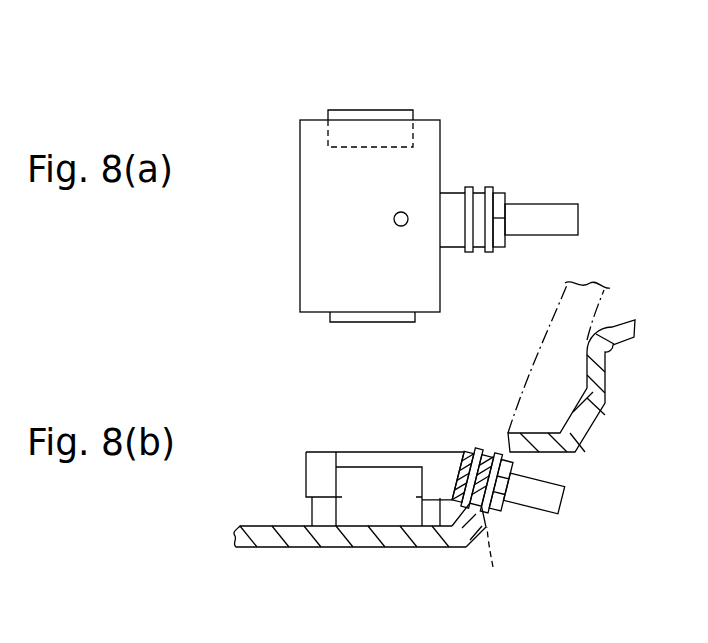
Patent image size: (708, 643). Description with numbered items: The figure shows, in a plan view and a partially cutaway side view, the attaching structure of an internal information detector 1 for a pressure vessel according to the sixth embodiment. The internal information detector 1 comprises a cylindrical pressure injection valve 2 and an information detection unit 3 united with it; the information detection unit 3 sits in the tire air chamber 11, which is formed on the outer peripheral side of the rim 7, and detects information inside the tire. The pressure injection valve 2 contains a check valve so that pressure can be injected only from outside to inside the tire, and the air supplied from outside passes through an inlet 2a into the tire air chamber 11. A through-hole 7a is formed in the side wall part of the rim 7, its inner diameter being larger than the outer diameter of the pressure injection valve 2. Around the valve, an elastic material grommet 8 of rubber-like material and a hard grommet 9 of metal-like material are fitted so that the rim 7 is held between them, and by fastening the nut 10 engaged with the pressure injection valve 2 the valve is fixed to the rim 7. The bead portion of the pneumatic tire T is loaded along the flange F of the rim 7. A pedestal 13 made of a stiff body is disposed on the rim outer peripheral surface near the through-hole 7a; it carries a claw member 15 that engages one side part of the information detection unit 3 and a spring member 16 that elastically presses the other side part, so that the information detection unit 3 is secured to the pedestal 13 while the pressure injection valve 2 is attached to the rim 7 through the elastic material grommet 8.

In FIG. 8A, the internal information detector 1 is at (313, 118).
In FIG. 8B, the internal information detector 1 is at (401, 450).
In FIG. 8A, the pressure injection valve 2 is at (548, 210).
In FIG. 8B, the pressure injection valve 2 is at (552, 500).
In FIG. 8A, the inlet 2a is at (406, 213).
In FIG. 8A, the information detection unit 3 is at (300, 212).
In FIG. 8B, the information detection unit 3 is at (320, 465).
In FIG. 8B, the rim 7 is at (277, 540).
In FIG. 8B, the through-hole 7a is at (483, 531).
In FIG. 8A, the elastic material grommet 8 is at (470, 187).
In FIG. 8B, the elastic material grommet 8 is at (473, 449).
In FIG. 8A, the hard grommet 9 is at (490, 187).
In FIG. 8B, the hard grommet 9 is at (499, 451).
In FIG. 8A, the nut 10 is at (505, 233).
In FIG. 8B, the nut 10 is at (512, 468).
In FIG. 8B, the tire air chamber 11 is at (260, 466).
In FIG. 8B, the pedestal 13 is at (325, 513).
In FIG. 8A, the claw member 15 is at (372, 117).
In FIG. 8A, the spring member 16 is at (396, 318).
In FIG. 8B, the spring member 16 is at (405, 510).
In FIG. 8B, the pneumatic tire T is at (608, 292).
In FIG. 8B, the flange F is at (605, 387).